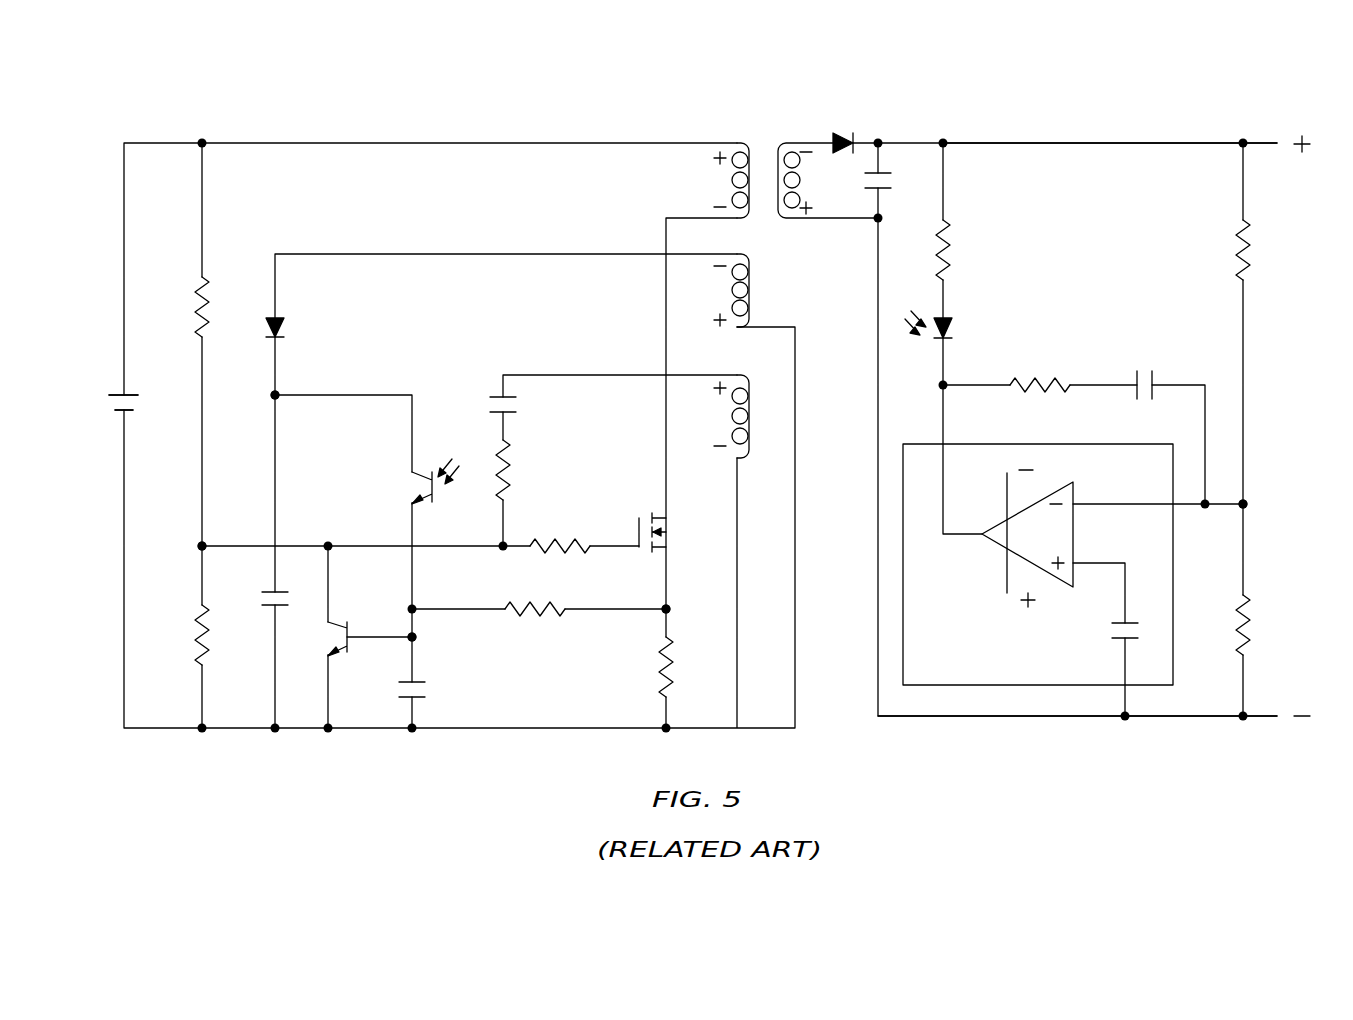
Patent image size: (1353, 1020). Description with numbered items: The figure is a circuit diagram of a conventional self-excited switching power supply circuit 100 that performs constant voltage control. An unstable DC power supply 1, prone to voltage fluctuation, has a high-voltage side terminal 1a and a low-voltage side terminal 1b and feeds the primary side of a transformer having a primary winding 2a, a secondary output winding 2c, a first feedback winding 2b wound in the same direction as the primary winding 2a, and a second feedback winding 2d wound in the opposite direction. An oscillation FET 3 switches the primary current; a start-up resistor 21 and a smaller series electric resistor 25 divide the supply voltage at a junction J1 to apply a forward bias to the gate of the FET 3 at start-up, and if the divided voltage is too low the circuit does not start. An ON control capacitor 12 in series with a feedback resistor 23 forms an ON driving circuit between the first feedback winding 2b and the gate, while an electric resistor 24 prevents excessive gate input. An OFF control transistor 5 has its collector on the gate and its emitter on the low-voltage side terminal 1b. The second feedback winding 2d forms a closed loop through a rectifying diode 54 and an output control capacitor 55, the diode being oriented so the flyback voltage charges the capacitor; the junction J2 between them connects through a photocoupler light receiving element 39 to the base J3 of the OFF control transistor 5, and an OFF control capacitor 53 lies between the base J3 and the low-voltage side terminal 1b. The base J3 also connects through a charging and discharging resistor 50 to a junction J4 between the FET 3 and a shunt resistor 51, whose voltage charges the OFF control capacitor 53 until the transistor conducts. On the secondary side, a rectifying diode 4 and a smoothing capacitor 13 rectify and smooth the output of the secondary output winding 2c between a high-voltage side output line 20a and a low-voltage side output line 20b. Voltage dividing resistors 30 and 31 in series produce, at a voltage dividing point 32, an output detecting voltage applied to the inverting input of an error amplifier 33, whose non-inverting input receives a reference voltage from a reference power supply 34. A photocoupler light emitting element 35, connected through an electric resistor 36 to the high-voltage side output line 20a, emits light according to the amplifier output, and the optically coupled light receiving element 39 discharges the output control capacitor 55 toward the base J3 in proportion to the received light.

The DC power supply 1 is at (112, 409).
The high-voltage side terminal 1a is at (139, 384).
The low-voltage side terminal 1b is at (143, 417).
The primary winding 2a is at (717, 180).
The first feedback winding 2b is at (719, 416).
The secondary output winding 2c is at (828, 180).
The second feedback winding 2d is at (717, 290).
The oscillation field effect transistor 3 is at (665, 532).
The rectifying diode 4 is at (843, 127).
The OFF control transistor 5 is at (325, 639).
The ON control capacitor 12 is at (518, 409).
The smoothing capacitor 13 is at (894, 182).
The start-up resistor 21 is at (182, 307).
The feedback resistor 23 is at (521, 470).
The electric resistor 24 is at (560, 531).
The electric resistor 25 is at (182, 635).
The voltage dividing resistor 30 is at (1261, 250).
The voltage dividing resistor 31 is at (1261, 625).
The voltage dividing point 32 is at (1263, 503).
The error amplifier 33 is at (1038, 564).
The reference power supply 34 is at (1105, 635).
The photocoupler light emitting element 35 is at (949, 324).
The electric resistor 36 is at (965, 250).
The photocoupler light receiving element 39 is at (409, 481).
The charging and discharging resistor 50 is at (535, 625).
The shunt resistor 51 is at (683, 667).
The OFF control capacitor 53 is at (431, 697).
The rectifying diode 54 is at (295, 332).
The output control capacitor 55 is at (257, 595).
The self-excited switching power supply circuit 100 is at (803, 103).
The high-voltage side output line 20a is at (1060, 143).
The low-voltage side output line 20b is at (1173, 716).
The junction J1 is at (179, 550).
The junction J2 is at (252, 397).
The base J3 is at (428, 640).
The junction J4 is at (682, 612).